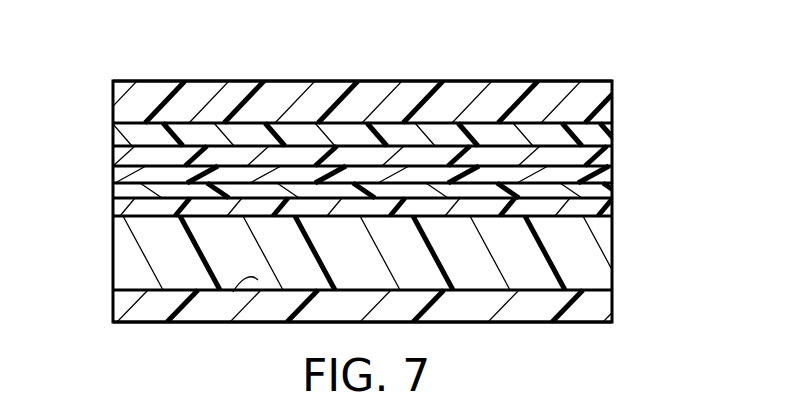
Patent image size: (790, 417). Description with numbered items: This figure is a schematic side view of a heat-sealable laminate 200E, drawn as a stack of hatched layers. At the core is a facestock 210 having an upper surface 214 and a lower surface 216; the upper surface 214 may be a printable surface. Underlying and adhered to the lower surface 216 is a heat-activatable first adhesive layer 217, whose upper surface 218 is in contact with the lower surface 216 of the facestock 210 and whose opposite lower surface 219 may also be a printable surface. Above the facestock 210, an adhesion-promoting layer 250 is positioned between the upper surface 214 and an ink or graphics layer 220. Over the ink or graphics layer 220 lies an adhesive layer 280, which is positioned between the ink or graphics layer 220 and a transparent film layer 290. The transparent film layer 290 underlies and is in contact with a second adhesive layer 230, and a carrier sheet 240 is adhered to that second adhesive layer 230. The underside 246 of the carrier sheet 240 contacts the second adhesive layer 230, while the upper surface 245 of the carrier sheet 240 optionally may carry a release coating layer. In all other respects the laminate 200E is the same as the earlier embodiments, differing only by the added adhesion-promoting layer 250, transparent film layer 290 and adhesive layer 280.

The heat-sealable laminate 200E is at (203, 65).
The upper surface of carrier sheet 245 is at (512, 82).
The underside of carrier sheet 246 is at (455, 122).
The carrier sheet 240 is at (612, 91).
The second adhesive layer 230 is at (612, 136).
The transparent film layer 290 is at (612, 156).
The adhesive layer 280 is at (612, 176).
The ink or graphics layer 220 is at (612, 192).
The upper surface of facestock 214 is at (148, 216).
The adhesion-promoting layer 250 is at (612, 208).
The facestock 210 is at (612, 241).
The lower surface of facestock 216 is at (181, 294).
The heat-activatable first adhesive layer 217 is at (612, 302).
The upper surface of first adhesive layer 218 is at (233, 292).
The lower surface of first adhesive layer 219 is at (270, 323).